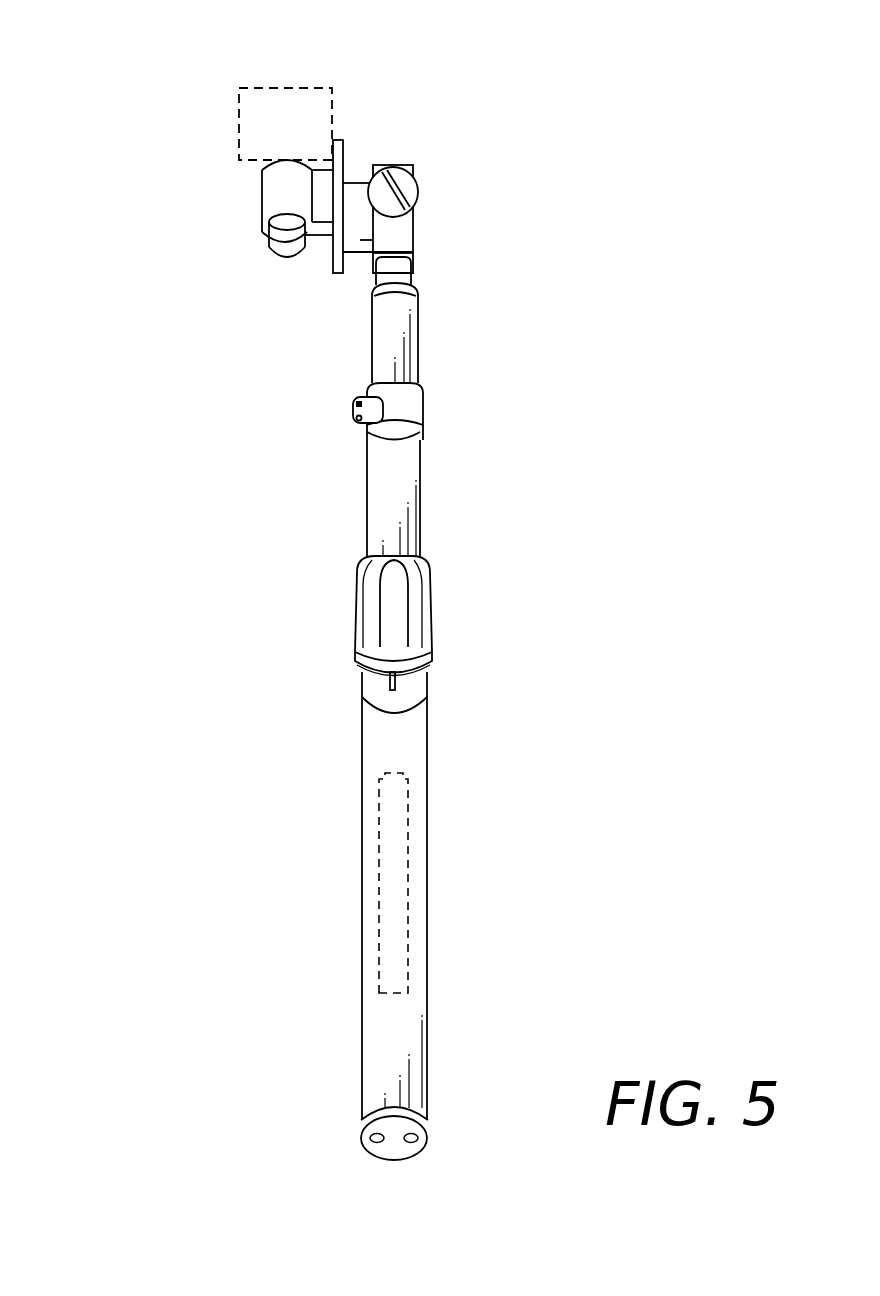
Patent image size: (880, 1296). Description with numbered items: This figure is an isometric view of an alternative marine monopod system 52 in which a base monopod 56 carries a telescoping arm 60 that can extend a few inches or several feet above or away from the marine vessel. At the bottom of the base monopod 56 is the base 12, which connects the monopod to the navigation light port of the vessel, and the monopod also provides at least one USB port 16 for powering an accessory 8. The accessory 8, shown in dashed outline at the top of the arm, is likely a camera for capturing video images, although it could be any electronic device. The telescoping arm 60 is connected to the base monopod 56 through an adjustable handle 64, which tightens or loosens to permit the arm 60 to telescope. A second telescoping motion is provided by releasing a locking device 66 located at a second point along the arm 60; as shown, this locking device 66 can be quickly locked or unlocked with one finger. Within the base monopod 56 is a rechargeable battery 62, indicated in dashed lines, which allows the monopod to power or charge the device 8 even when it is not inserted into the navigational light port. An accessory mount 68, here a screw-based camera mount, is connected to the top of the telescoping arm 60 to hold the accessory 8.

The marine monopod system 52 is at (110, 80).
The accessory 8 is at (238, 92).
The accessory mount 68 is at (420, 182).
The locking device 66 is at (353, 410).
The telescoping arm 60 is at (422, 512).
The adjustable handle 64 is at (433, 623).
The base monopod 56 is at (362, 932).
The USB port 16 is at (395, 683).
The rechargeable battery 62 is at (408, 868).
The base 12 is at (427, 1129).